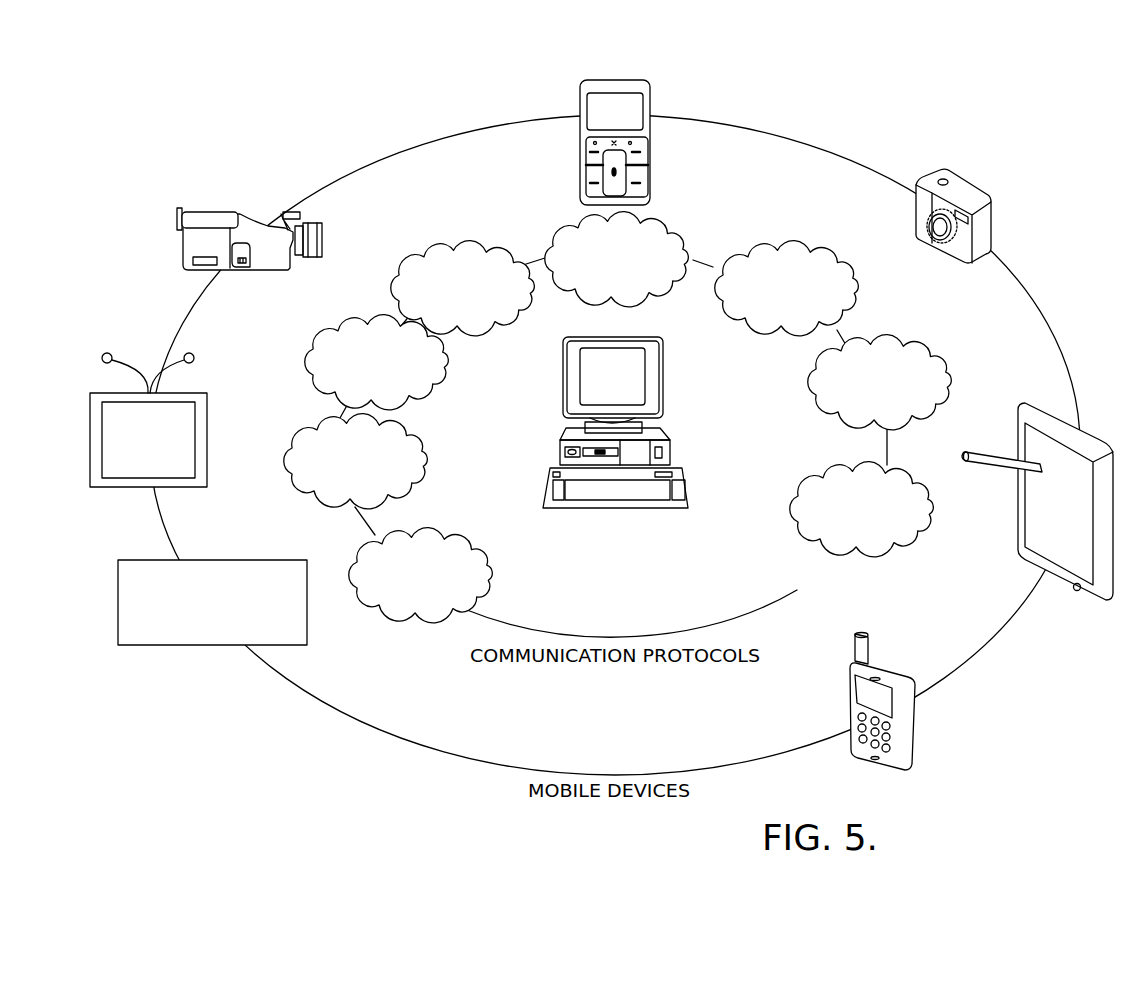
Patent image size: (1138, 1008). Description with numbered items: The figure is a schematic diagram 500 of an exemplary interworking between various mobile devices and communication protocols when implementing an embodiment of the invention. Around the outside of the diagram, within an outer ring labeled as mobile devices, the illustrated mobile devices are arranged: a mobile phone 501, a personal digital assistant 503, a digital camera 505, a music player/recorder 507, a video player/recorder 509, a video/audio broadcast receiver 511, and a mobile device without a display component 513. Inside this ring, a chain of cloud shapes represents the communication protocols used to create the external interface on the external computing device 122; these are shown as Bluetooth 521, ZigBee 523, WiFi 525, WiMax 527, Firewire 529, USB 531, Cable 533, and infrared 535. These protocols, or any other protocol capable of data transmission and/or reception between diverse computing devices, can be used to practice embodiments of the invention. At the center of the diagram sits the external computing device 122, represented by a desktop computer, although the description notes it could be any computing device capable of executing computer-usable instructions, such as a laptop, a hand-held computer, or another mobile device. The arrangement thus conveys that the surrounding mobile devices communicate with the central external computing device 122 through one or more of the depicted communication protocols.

The schematic diagram 500 is at (309, 791).
The mobile phone 501 is at (915, 718).
The personal digital assistant 503 is at (1058, 600).
The digital camera 505 is at (972, 183).
The music player/recorder 507 is at (580, 105).
The video player/recorder 509 is at (222, 211).
The video/audio broadcast receiver 511 is at (130, 490).
The mobile device without a display component 513 is at (212, 647).
The Bluetooth 521 is at (884, 553).
The ZigBee 523 is at (889, 338).
The WiFi 525 is at (793, 243).
The WiMax 527 is at (670, 225).
The Firewire 529 is at (470, 242).
The USB 531 is at (318, 322).
The Cable 533 is at (284, 476).
The infrared 535 is at (441, 622).
The external computing device 122 is at (670, 373).